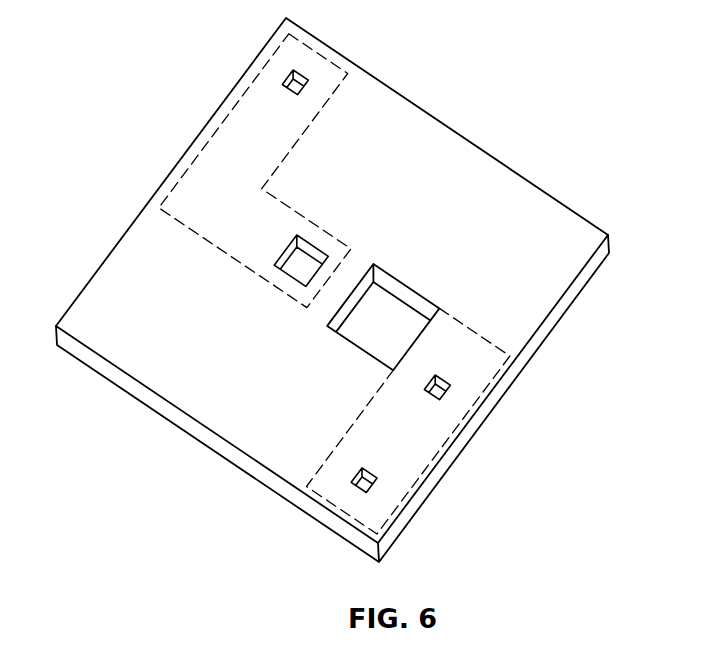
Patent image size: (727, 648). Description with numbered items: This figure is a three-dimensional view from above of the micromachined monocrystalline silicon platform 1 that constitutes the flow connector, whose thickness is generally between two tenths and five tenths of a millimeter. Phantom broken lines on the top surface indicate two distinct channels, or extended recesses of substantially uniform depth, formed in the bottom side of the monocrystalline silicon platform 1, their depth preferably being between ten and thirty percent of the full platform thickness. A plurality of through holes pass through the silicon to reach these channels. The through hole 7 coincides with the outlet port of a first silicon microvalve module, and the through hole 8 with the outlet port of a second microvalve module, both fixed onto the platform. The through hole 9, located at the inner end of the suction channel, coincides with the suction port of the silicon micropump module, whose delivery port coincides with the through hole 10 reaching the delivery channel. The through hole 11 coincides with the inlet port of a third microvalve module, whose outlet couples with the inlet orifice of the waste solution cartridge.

The monocrystalline silicon platform 1 is at (600, 266).
The through hole 7 is at (373, 489).
The through hole 8 is at (444, 396).
The through hole 9 is at (418, 329).
The through hole 10 is at (276, 260).
The through hole 11 is at (306, 86).